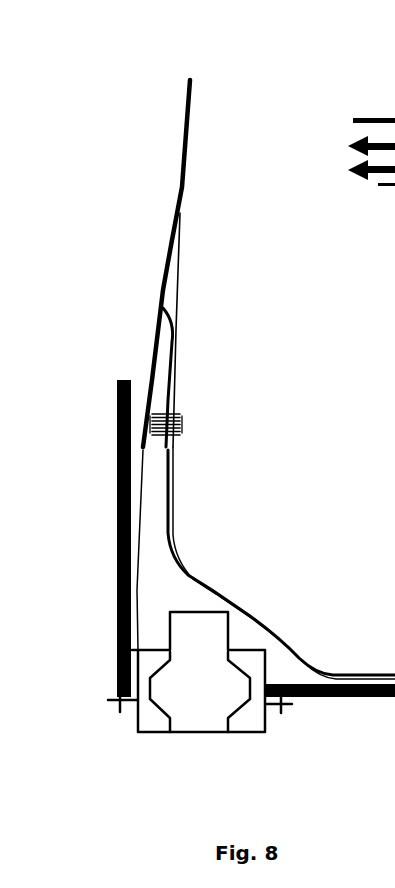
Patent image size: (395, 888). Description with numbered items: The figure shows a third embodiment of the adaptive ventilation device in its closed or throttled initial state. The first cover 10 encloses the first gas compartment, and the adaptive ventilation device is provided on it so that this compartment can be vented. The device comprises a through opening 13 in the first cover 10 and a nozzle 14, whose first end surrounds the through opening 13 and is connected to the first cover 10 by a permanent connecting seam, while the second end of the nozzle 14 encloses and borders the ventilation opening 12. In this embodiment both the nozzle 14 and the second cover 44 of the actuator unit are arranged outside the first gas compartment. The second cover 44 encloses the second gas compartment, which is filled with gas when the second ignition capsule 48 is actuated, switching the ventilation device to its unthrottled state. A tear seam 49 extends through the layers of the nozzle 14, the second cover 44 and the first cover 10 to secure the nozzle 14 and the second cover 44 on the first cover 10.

The first cover 10 is at (190, 97).
The ventilation opening 12 is at (370, 128).
The through opening 13 is at (182, 187).
The nozzle 14 is at (157, 293).
The second cover 44 is at (167, 508).
The second ignition capsule 48 is at (213, 647).
The tear seam 49 is at (178, 420).